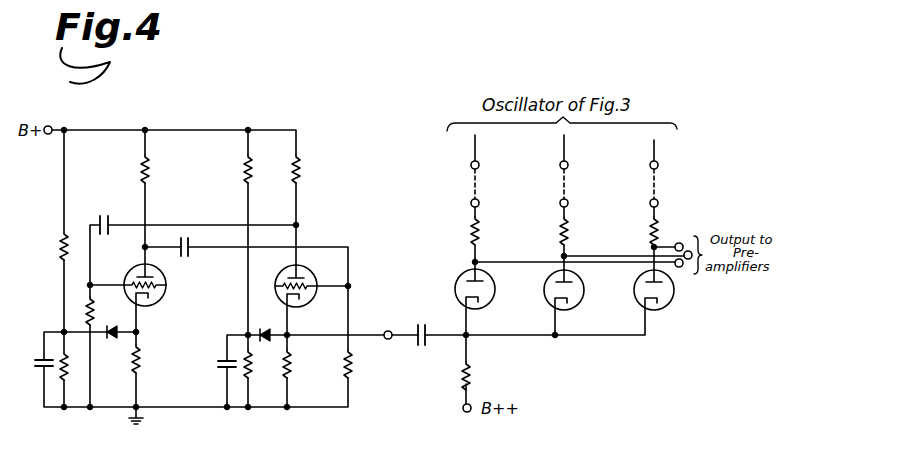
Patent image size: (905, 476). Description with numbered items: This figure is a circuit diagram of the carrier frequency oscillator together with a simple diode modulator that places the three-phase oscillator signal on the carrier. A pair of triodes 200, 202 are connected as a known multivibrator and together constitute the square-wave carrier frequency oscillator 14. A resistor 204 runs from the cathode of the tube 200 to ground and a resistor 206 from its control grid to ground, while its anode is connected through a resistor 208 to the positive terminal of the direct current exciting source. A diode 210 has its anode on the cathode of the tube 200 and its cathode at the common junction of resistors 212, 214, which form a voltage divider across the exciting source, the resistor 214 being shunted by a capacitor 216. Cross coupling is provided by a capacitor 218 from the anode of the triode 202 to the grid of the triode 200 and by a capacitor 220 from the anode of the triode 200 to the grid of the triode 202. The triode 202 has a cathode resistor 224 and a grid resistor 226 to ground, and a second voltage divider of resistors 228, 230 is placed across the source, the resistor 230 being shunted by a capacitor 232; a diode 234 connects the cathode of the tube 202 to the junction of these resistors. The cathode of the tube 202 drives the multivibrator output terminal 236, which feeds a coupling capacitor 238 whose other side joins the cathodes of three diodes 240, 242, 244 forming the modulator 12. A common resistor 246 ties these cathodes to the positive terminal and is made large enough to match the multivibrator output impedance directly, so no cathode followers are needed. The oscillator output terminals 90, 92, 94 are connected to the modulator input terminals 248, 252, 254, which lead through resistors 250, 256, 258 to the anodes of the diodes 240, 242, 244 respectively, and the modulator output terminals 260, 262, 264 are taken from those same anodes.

The modulator 12 is at (547, 192).
The square-wave carrier frequency oscillator 14 is at (199, 213).
The output terminal 90 is at (479, 165).
The output terminal 92 is at (568, 165).
The output terminal 94 is at (658, 165).
The triode 200 is at (159, 304).
The triode 202 is at (316, 294).
The resistor 204 is at (138, 358).
The resistor 206 is at (88, 312).
The resistor 208 is at (142, 170).
The diode 210 is at (125, 314).
The resistor 212 is at (62, 252).
The resistor 214 is at (60, 374).
The capacitor 216 is at (39, 364).
The capacitor 218 is at (114, 196).
The capacitor 220 is at (189, 252).
The resistor 224 is at (290, 362).
The resistor 226 is at (346, 366).
The resistor 228 is at (245, 168).
The resistor 230 is at (252, 368).
The capacitor 232 is at (222, 366).
The diode 234 is at (280, 314).
The output terminal 236 is at (388, 341).
The coupling capacitor 238 is at (440, 305).
The diode 240 is at (456, 284).
The diode 242 is at (544, 291).
The diode 244 is at (633, 294).
The common resistor 246 is at (470, 372).
The input terminal 248 is at (479, 203).
The resistor 250 is at (472, 232).
The input terminal 252 is at (568, 203).
The input terminal 254 is at (658, 203).
The resistor 256 is at (561, 232).
The resistor 258 is at (651, 232).
The output terminal 260 is at (679, 243).
The output terminal 262 is at (691, 259).
The output terminal 264 is at (679, 267).